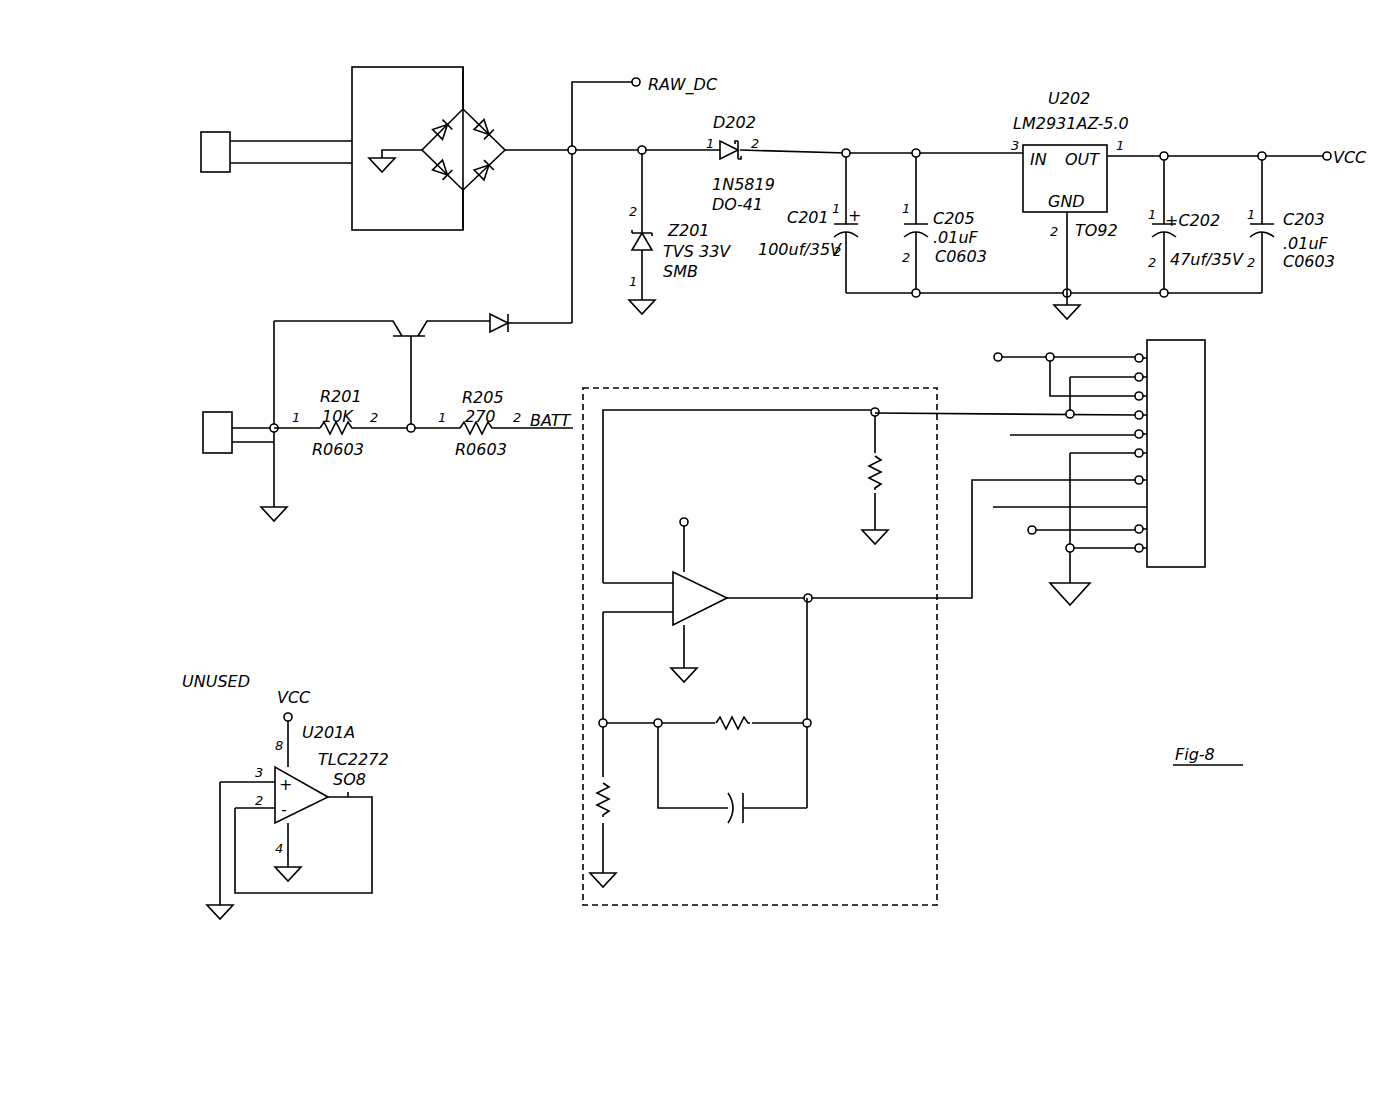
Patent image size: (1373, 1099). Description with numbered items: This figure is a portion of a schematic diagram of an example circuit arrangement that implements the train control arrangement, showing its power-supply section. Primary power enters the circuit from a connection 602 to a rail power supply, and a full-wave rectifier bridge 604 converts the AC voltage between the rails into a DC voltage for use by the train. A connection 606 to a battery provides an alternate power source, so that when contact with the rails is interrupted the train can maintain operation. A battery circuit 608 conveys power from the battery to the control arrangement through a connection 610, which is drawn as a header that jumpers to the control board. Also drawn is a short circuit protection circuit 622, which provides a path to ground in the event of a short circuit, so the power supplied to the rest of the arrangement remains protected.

The connection to a rail power supply 602 is at (245, 110).
The full-wave rectifier bridge 604 is at (497, 110).
The connection to a battery 606 is at (233, 380).
The battery circuit 608 is at (466, 280).
The connection 610 is at (1232, 365).
The short circuit protection circuit 622 is at (937, 733).